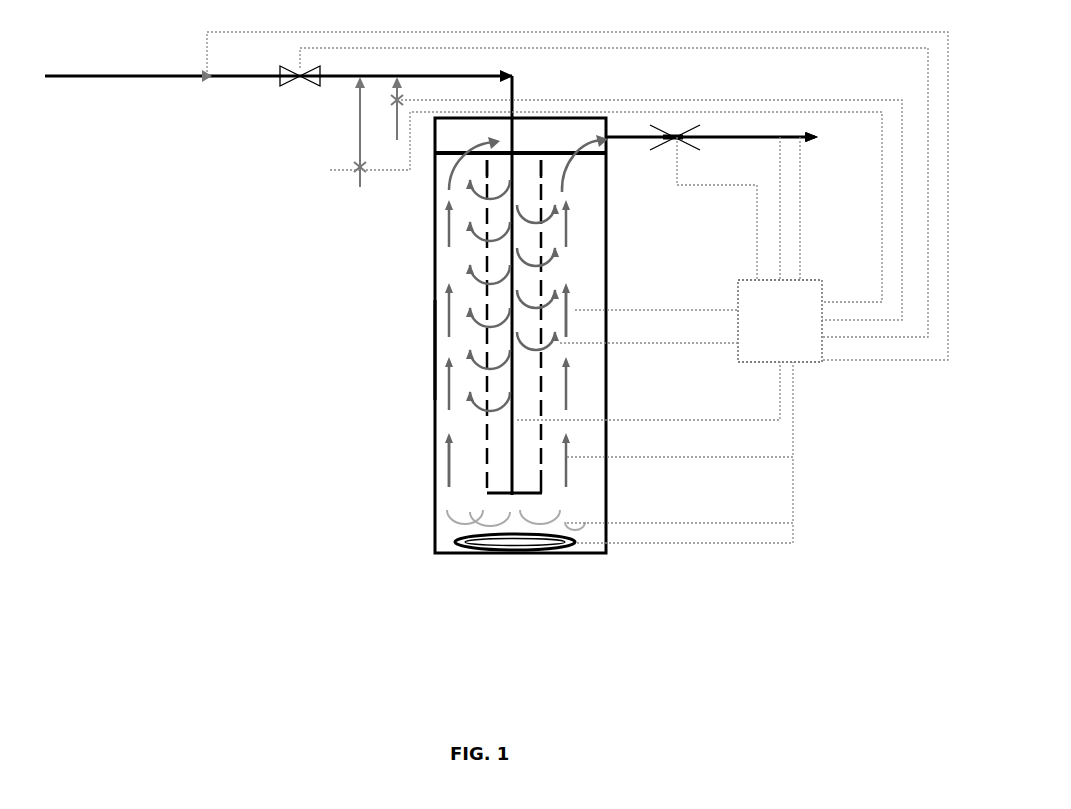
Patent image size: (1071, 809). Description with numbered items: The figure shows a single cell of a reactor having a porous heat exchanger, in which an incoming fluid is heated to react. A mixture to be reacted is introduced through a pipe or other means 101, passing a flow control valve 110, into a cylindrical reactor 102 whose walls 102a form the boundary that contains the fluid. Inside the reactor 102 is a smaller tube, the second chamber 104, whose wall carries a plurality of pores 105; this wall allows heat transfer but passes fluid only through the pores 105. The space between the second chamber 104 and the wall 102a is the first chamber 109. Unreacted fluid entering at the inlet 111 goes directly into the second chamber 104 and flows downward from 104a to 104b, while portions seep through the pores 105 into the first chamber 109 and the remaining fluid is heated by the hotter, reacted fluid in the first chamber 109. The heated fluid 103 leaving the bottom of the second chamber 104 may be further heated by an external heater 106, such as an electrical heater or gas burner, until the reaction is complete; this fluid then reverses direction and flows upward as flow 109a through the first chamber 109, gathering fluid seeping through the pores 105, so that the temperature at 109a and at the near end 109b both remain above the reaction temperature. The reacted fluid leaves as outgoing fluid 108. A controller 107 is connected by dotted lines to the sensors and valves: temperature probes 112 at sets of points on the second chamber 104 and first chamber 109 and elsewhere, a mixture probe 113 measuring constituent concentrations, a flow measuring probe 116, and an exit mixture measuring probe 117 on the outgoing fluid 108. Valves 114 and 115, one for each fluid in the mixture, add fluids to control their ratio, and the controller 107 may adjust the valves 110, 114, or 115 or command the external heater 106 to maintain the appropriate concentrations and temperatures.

The means for introducing mixture 101 is at (82, 72).
The reactor 102 is at (410, 294).
The walls 102a is at (435, 349).
The heated fluid 103 is at (553, 510).
The second chamber 104 is at (500, 256).
The upper end of second chamber 104a is at (527, 182).
The lower end of second chamber 104b is at (500, 478).
The pores 105 is at (487, 400).
The external heater 106 is at (567, 550).
The controller 107 is at (780, 321).
The outgoing fluid 108 is at (772, 135).
The first chamber 109 is at (443, 372).
The upward flow at far end of first chamber 109a is at (452, 486).
The near end of first chamber 109b is at (567, 293).
The flow control valve 110 is at (290, 78).
The inlet 111 is at (517, 145).
The temperature probes 112 is at (683, 457).
The mixture probe 113 is at (203, 82).
The valve 114 is at (590, 189).
The valve 115 is at (398, 118).
The flow measuring probe 116 is at (687, 143).
The exit mixture measuring probe 117 is at (805, 142).